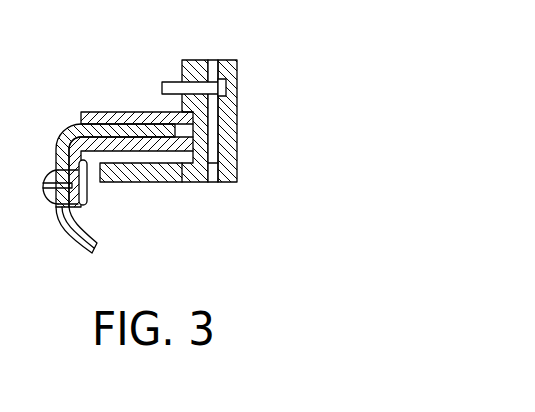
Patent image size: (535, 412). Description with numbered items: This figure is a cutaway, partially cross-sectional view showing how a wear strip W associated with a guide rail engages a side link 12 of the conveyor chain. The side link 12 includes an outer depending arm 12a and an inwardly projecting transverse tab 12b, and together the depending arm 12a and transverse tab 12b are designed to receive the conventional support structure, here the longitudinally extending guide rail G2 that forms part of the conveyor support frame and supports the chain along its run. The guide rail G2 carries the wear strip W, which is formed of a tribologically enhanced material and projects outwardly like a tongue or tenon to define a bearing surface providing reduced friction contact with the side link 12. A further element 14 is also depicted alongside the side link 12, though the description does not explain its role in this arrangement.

The side link 12 is at (208, 98).
The outer depending arm 12a is at (230, 172).
The transverse tab 12b is at (160, 183).
The pin 14 is at (162, 88).
The wear strip W is at (195, 136).
The guide rail G2 is at (75, 245).